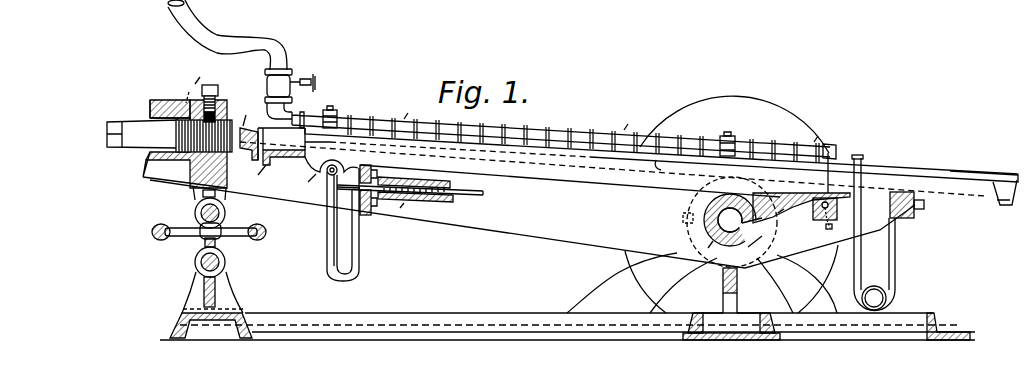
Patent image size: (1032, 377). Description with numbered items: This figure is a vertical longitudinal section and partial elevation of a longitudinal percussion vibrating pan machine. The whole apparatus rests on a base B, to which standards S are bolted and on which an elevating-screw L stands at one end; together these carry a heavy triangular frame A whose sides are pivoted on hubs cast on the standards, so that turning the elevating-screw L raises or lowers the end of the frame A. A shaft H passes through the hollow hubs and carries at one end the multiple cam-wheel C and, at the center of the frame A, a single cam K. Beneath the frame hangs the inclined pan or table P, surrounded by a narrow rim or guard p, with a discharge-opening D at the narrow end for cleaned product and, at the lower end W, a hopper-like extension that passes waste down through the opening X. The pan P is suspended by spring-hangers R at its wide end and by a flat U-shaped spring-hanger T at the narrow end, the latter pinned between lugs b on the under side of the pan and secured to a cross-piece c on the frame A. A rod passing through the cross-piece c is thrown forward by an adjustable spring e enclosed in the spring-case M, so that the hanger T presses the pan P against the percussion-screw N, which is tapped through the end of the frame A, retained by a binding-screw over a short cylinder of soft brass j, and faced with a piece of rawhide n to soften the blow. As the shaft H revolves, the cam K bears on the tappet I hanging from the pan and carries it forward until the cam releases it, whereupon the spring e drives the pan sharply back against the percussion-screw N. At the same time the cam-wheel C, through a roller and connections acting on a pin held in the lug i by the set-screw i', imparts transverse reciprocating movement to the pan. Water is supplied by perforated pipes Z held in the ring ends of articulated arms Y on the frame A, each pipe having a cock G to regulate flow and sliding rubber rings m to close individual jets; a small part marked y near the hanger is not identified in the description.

The triangular frame A is at (584, 198).
The frame or base B is at (567, 326).
The multiple cam-wheel C is at (731, 204).
The discharge-opening D is at (276, 156).
The valve or cock G is at (241, 59).
The shaft H is at (733, 221).
The lug or tappet I is at (801, 209).
The single cam K is at (730, 222).
The elevating-screw L is at (209, 262).
The spring-case M is at (410, 200).
The percussion-screw N is at (169, 144).
The pan or table P is at (612, 169).
The spring-hanger R is at (888, 233).
The standard S is at (702, 296).
The spring-hanger T is at (343, 224).
The lower end of pan W is at (984, 165).
The opening X is at (1005, 202).
The articulated arm Y is at (529, 124).
The pipe Z is at (564, 137).
The lugs b is at (329, 175).
The cross-piece c is at (368, 196).
The adjustable spring e is at (415, 196).
The lug i is at (186, 92).
The set-screw i' is at (830, 218).
The short cylinder of soft brass j is at (205, 94).
The rubber tubing ring m is at (609, 121).
The piece of rawhide n is at (249, 132).
The rim or guard p is at (661, 170).
The lever y is at (348, 193).